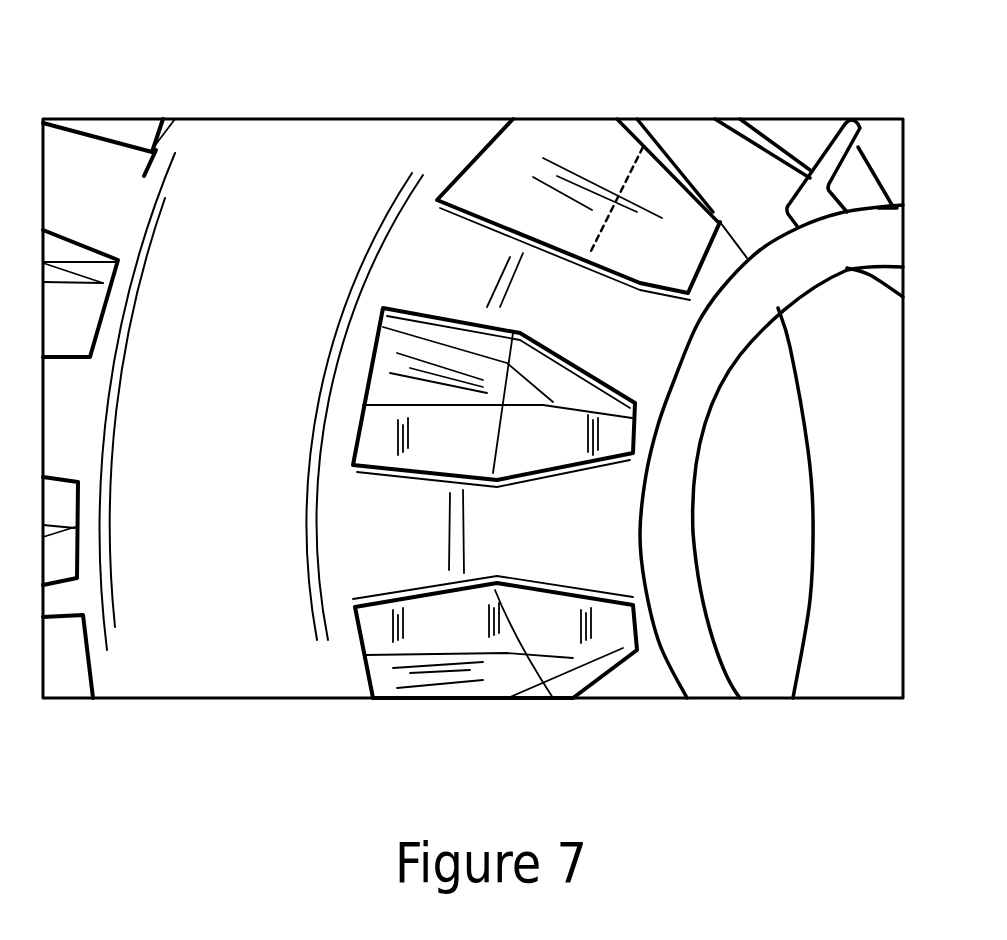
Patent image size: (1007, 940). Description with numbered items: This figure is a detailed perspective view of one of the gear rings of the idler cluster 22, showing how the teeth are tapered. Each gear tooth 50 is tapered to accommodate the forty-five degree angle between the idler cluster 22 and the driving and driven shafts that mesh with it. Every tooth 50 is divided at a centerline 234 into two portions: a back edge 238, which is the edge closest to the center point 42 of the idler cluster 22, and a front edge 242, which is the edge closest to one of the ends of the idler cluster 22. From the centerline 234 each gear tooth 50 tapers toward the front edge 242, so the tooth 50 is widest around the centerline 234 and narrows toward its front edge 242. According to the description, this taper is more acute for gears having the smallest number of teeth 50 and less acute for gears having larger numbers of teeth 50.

The idler cluster 22 is at (187, 683).
The center point 42 is at (627, 173).
The gear tooth 50 is at (610, 662).
The centerline 234 is at (570, 236).
The back edge 238 is at (473, 152).
The front edge 242 is at (700, 177).